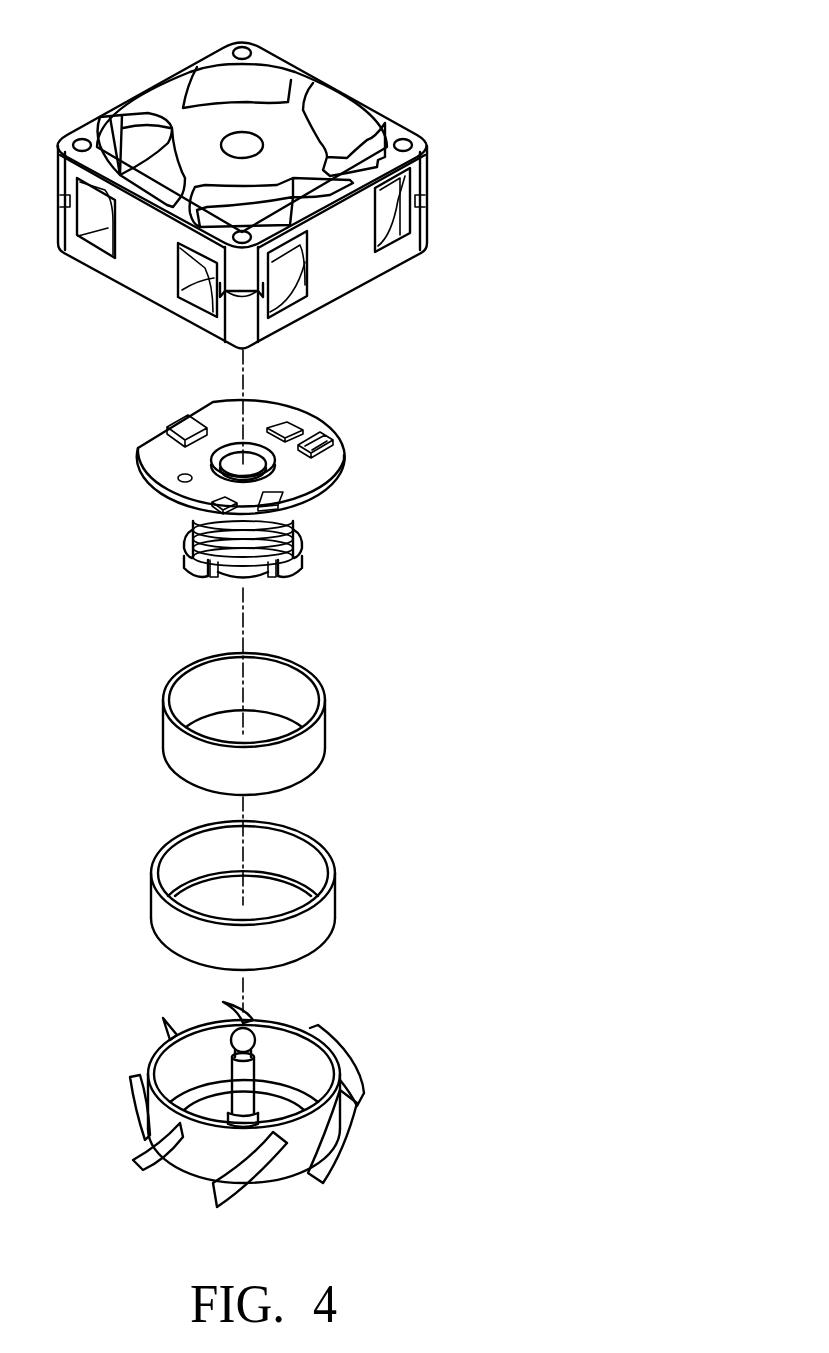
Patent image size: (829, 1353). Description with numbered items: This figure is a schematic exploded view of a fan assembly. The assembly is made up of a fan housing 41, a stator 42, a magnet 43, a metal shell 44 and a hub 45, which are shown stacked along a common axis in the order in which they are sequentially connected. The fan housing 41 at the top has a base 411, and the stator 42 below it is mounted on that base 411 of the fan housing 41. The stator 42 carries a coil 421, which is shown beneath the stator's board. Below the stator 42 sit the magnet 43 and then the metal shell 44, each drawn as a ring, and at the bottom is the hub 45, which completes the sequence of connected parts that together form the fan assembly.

The fan housing 41 is at (409, 106).
The base 411 is at (220, 123).
The stator 42 is at (332, 412).
The coil 421 is at (300, 518).
The magnet 43 is at (325, 730).
The metal shell 44 is at (335, 898).
The hub 45 is at (355, 1137).